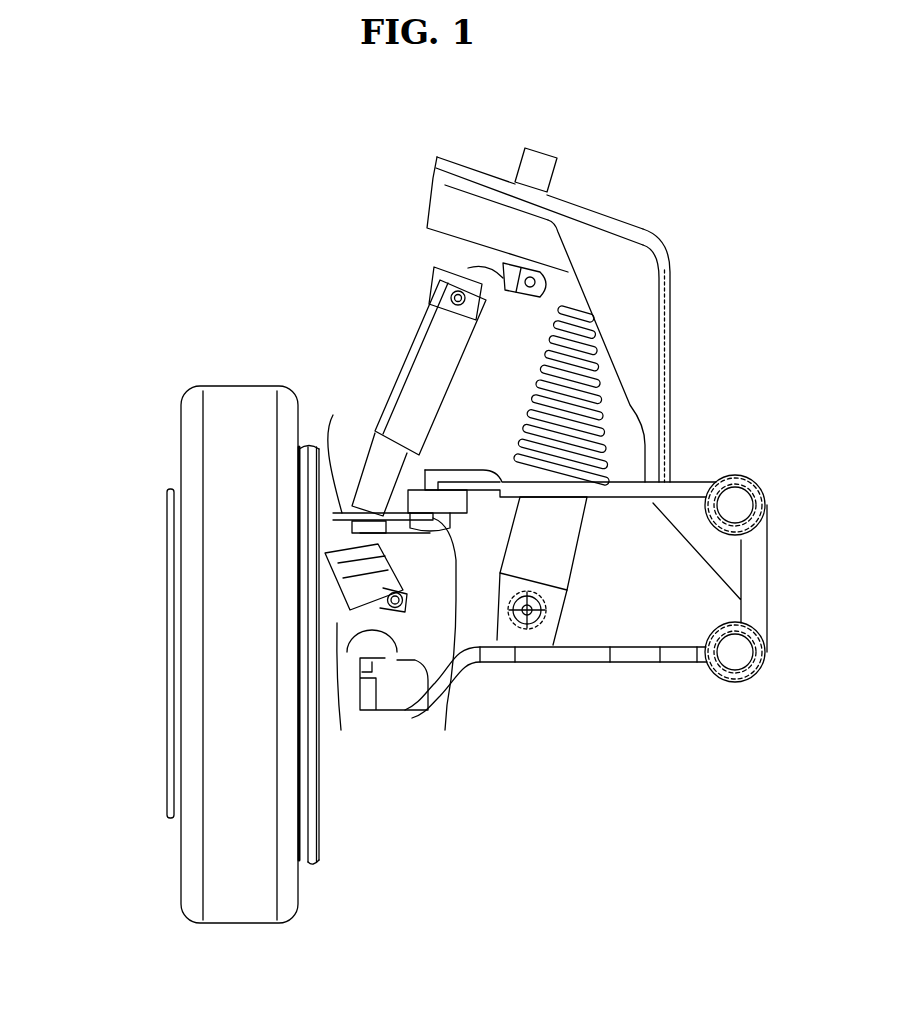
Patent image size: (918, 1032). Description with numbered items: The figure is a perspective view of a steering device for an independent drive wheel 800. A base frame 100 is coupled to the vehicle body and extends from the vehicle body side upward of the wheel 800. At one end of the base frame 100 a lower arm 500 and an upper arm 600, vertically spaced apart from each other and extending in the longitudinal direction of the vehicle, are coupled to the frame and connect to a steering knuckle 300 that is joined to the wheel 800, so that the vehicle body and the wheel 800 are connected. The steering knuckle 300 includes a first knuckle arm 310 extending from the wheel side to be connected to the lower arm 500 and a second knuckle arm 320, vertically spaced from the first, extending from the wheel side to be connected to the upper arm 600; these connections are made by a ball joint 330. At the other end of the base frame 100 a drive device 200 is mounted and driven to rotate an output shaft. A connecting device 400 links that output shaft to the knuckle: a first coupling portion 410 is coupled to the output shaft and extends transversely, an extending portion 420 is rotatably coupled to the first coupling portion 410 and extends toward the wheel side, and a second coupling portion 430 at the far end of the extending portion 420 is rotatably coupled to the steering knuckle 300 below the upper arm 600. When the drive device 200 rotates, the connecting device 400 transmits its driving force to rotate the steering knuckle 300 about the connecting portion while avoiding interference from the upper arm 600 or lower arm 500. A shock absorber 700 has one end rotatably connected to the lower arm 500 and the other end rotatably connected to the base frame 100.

The base frame 100 is at (640, 347).
The drive device 200 is at (470, 215).
The steering knuckle 300 is at (287, 648).
The first knuckle arm 310 is at (333, 640).
The second knuckle arm 320 is at (333, 415).
The ball joint 330 is at (425, 715).
The connecting device 400 is at (278, 382).
The first coupling portion 410 is at (460, 263).
The extending portion 420 is at (420, 328).
The second coupling portion 430 is at (380, 537).
The lower arm 500 is at (634, 656).
The upper arm 600 is at (672, 490).
The shock absorber 700 is at (533, 557).
The wheel 800 is at (232, 391).